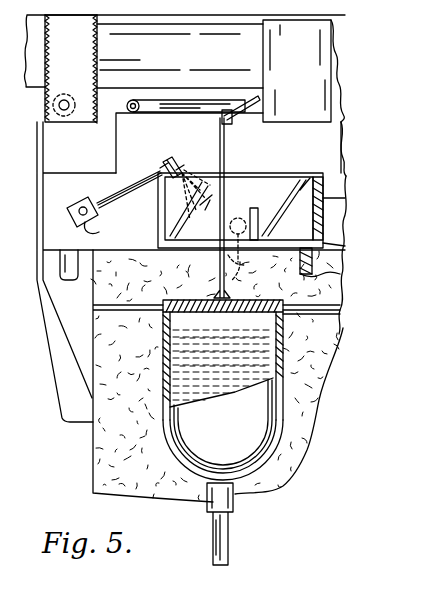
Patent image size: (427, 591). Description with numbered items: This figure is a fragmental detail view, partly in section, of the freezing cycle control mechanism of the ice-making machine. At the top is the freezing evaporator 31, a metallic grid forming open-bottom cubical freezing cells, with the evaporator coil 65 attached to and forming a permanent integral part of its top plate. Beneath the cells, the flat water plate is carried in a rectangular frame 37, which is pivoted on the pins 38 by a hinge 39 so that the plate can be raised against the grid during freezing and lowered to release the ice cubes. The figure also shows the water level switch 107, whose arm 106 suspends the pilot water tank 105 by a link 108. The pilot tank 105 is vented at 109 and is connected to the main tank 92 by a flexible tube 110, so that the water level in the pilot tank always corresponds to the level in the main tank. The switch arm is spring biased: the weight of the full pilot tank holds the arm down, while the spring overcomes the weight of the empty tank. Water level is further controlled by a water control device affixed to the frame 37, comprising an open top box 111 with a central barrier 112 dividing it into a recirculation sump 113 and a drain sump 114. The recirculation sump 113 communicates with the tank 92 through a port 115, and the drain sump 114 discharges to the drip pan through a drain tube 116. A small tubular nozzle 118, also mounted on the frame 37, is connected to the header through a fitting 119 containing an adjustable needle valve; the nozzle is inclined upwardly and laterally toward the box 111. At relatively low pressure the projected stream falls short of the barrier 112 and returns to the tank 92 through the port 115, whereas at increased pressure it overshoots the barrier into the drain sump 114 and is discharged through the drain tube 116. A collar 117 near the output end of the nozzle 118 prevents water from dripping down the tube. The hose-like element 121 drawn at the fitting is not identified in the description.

The freezing evaporator 31 is at (348, 160).
The rectangular frame 37 is at (340, 222).
The pins 38 is at (65, 95).
The hinge 39 is at (48, 150).
The evaporator coil 65 is at (160, 100).
The main tank 92 is at (305, 452).
The pilot water tank 105 is at (284, 398).
The arm 106 is at (244, 98).
The water level switch 107 is at (326, 77).
The link 108 is at (226, 150).
The vent 109 is at (140, 275).
The flexible tube 110 is at (229, 541).
The open top box 111 is at (335, 196).
The central barrier 112 is at (296, 197).
The recirculation sump 113 is at (198, 221).
The drain sump 114 is at (306, 230).
The port 115 is at (253, 272).
The drain tube 116 is at (342, 272).
The collar 117 is at (172, 172).
The tubular nozzle 118 is at (118, 204).
The fitting 119 is at (79, 203).
The hose 121 is at (103, 231).